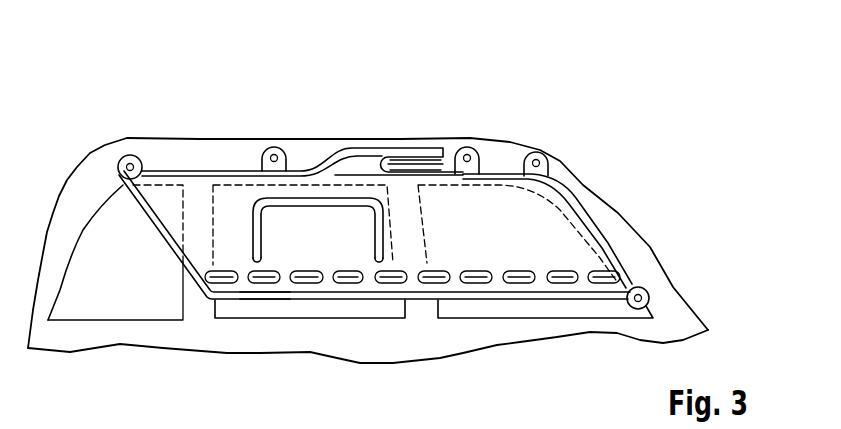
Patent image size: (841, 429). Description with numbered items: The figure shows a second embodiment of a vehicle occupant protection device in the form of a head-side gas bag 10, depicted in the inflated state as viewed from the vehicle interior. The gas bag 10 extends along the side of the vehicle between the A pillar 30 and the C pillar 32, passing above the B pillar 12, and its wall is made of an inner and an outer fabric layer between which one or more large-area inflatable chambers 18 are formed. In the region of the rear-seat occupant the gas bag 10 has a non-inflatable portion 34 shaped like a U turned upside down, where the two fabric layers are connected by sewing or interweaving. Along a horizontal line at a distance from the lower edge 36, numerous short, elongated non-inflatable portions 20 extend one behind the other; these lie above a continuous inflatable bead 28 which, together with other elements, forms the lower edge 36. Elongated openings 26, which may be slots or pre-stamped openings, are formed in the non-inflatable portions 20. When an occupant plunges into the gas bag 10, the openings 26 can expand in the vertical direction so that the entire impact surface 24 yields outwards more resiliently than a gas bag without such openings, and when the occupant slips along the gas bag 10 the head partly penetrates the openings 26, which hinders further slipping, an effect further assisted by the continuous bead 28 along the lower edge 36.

The head-side gas bag 10 is at (580, 247).
The B pillar 12 is at (424, 306).
The inflatable chamber 18 is at (508, 210).
The non-inflatable portion 20 is at (305, 283).
The impact surface 24 is at (312, 242).
The elongated opening 26 is at (352, 285).
The inflatable bead 28 is at (477, 285).
The A pillar 30 is at (580, 184).
The C pillar 32 is at (202, 306).
The non-inflatable portion 34 is at (362, 205).
The lower edge 36 is at (263, 300).